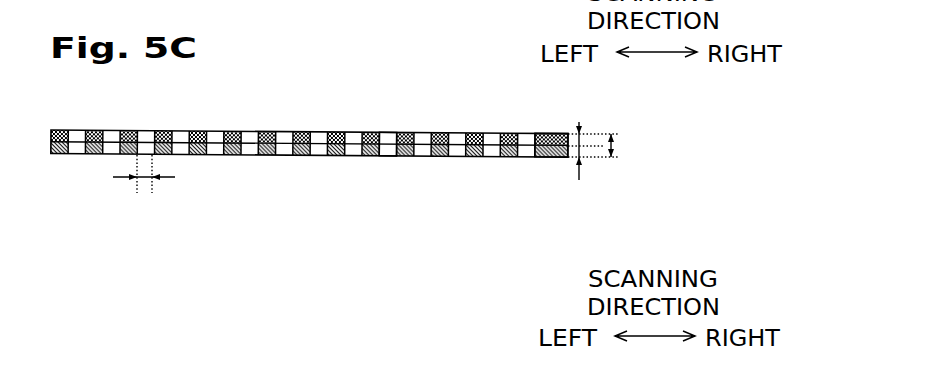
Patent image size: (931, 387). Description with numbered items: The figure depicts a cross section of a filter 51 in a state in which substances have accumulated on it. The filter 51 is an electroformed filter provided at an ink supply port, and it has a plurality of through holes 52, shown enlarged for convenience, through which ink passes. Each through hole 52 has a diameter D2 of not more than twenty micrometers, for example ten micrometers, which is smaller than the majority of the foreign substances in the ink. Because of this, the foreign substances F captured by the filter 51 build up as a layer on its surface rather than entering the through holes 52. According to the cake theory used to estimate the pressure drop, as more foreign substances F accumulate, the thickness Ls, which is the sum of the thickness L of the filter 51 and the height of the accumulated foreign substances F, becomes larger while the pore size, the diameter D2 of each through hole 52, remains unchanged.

The foreign substances F is at (311, 145).
The filter 51 is at (552, 157).
The through hole 52 is at (387, 151).
The diameter of through hole D2 is at (144, 179).
The thickness of filter L is at (581, 151).
The thickness of filter plus accumulated substances Ls is at (615, 147).